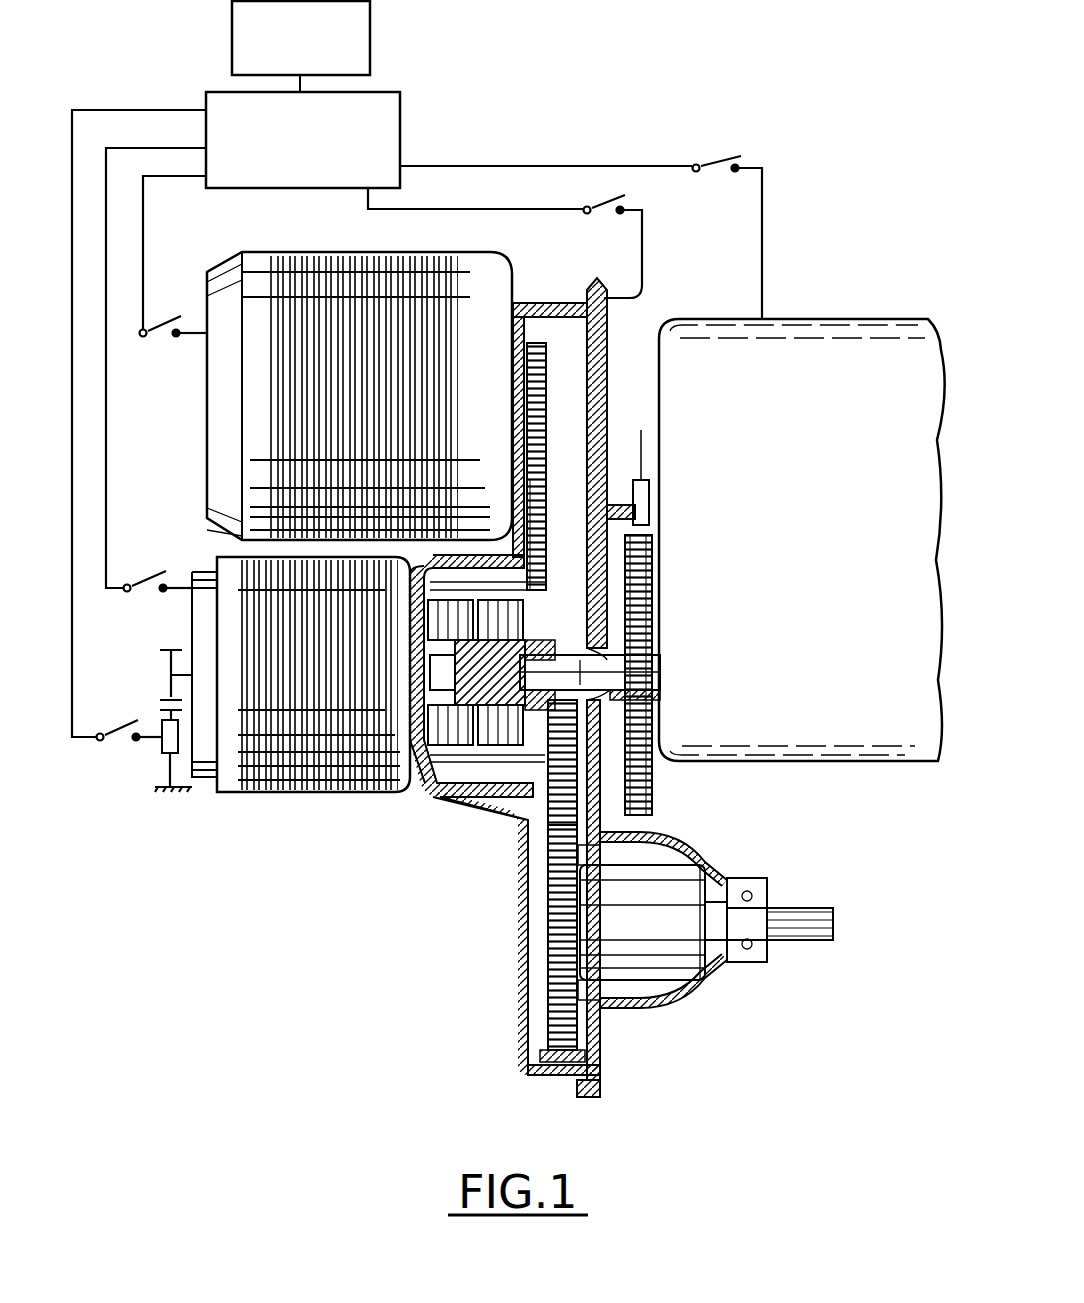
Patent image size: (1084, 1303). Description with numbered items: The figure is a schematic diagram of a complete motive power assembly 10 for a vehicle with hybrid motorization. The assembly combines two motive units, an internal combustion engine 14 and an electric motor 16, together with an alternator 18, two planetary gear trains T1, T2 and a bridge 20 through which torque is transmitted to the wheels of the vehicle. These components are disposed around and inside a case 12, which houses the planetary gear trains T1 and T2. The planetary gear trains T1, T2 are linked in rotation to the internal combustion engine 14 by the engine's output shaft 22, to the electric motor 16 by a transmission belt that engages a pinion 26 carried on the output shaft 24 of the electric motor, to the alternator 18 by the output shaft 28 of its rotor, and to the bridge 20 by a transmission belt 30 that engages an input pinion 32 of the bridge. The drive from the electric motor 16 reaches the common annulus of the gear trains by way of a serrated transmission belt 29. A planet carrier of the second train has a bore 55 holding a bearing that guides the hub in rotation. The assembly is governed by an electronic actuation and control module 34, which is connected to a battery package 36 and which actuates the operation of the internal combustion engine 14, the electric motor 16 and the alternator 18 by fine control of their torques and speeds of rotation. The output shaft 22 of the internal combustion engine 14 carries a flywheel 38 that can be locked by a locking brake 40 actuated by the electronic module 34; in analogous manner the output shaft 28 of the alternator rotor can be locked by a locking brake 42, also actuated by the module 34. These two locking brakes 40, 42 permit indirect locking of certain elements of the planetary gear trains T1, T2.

The motive power assembly 10 is at (766, 147).
The case 12 is at (640, 298).
The internal combustion engine 14 is at (828, 494).
The electric motor 16 is at (297, 252).
The alternator 18 is at (318, 792).
The bridge 20 is at (668, 960).
The output shaft 22 is at (665, 668).
The output shaft 24 is at (517, 408).
The pinion 26 is at (560, 378).
The output shaft 28 is at (410, 683).
The serrated transmission belt 29 is at (545, 485).
The transmission belt 30 is at (557, 793).
The input pinion 32 is at (548, 940).
The electronic actuation and control module 34 is at (303, 131).
The battery package 36 is at (301, 38).
The flywheel 38 is at (653, 564).
The locking brake 40 is at (656, 503).
The locking brake 42 is at (163, 748).
The bore 55 is at (652, 694).
The first planetary gear train T1 is at (440, 770).
The second planetary gear train T2 is at (483, 770).